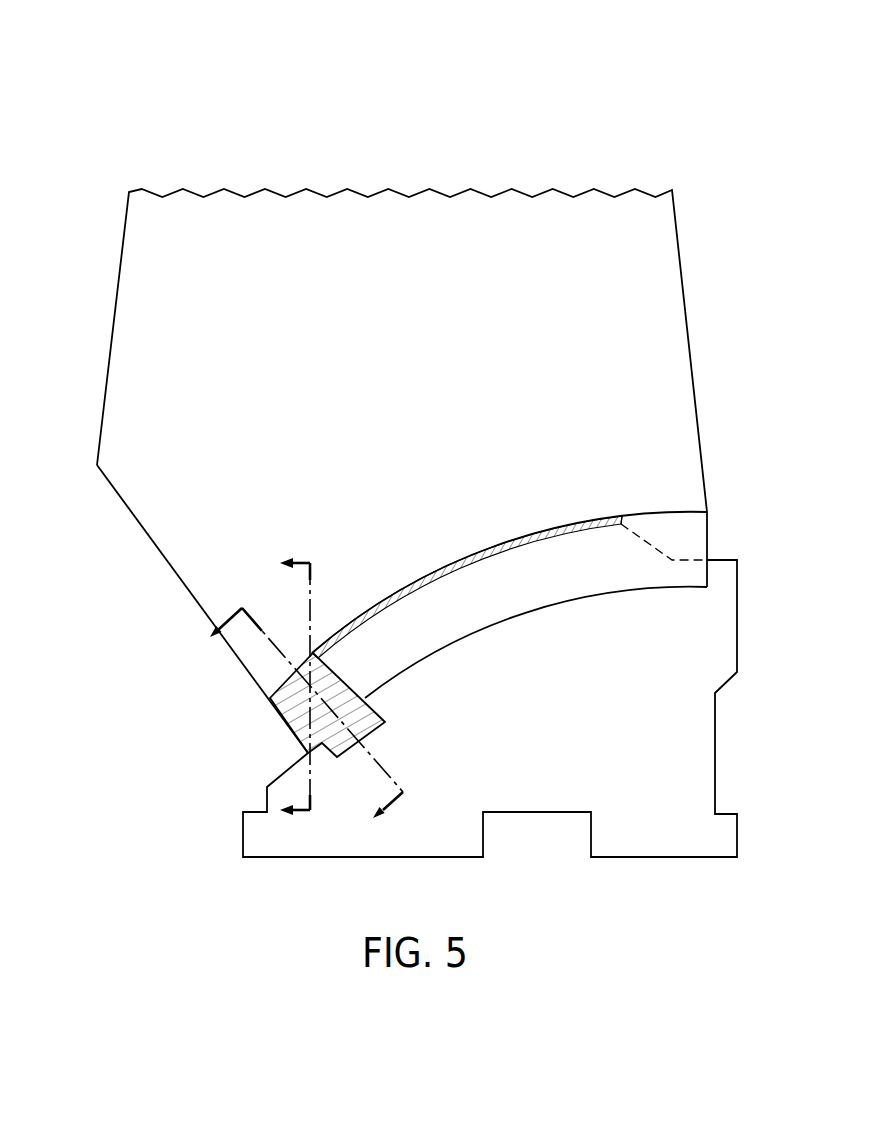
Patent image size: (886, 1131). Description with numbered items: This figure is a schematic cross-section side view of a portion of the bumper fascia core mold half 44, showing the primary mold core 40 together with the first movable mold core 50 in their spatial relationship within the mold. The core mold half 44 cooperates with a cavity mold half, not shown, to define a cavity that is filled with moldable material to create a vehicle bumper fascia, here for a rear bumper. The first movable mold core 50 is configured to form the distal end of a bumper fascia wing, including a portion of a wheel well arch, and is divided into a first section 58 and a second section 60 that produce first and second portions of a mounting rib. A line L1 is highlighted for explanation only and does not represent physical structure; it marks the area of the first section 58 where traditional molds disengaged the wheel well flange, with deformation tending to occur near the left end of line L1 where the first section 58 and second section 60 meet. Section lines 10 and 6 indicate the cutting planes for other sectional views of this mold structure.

The bumper fascia core mold half 44 is at (208, 381).
The primary mold core 40 is at (305, 237).
The first movable mold core 50 is at (737, 620).
The first section 58 is at (242, 560).
The second section 60 is at (585, 404).
The line L1 is at (485, 545).
The section line 10- 10 is at (295, 687).
The section line 6- 6 is at (292, 729).